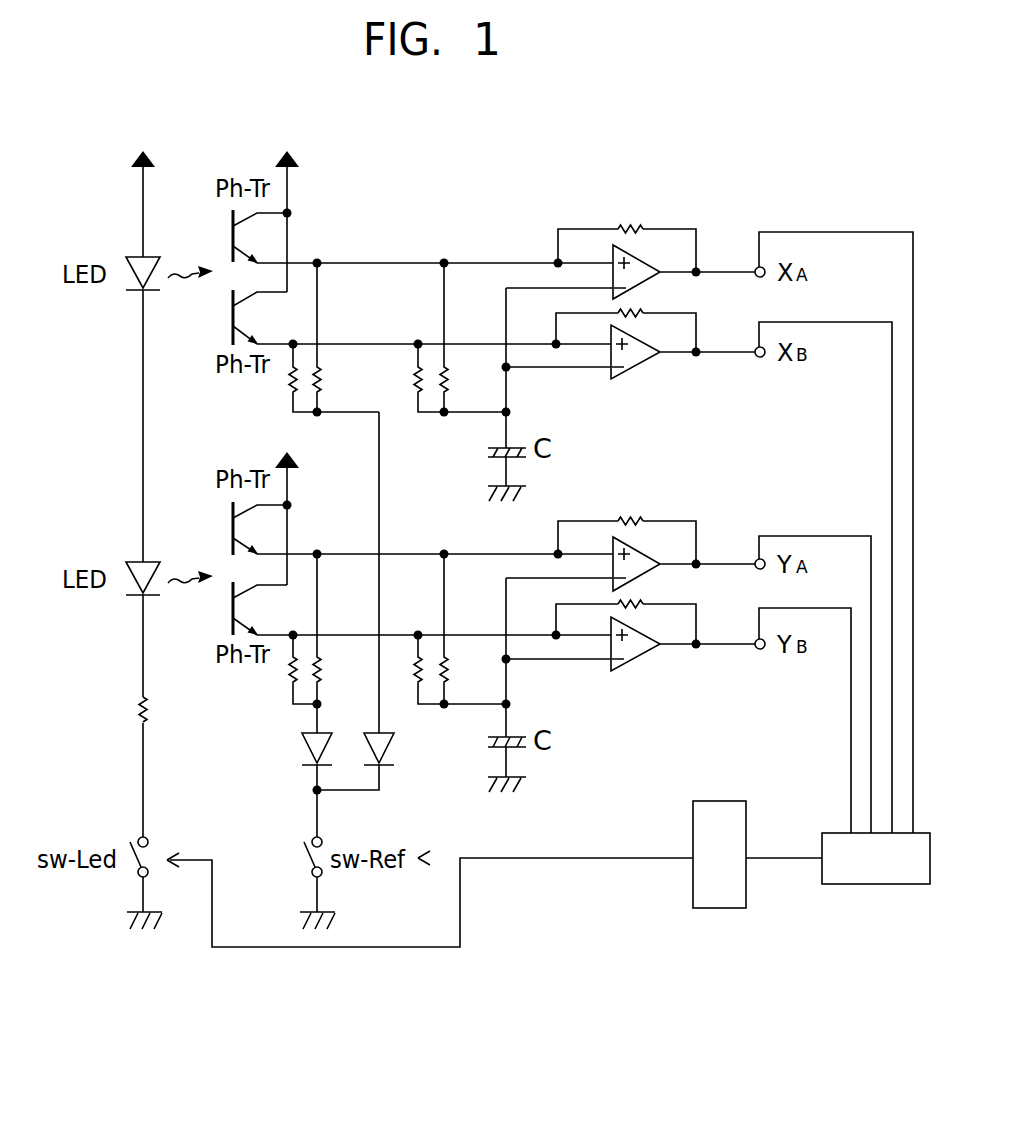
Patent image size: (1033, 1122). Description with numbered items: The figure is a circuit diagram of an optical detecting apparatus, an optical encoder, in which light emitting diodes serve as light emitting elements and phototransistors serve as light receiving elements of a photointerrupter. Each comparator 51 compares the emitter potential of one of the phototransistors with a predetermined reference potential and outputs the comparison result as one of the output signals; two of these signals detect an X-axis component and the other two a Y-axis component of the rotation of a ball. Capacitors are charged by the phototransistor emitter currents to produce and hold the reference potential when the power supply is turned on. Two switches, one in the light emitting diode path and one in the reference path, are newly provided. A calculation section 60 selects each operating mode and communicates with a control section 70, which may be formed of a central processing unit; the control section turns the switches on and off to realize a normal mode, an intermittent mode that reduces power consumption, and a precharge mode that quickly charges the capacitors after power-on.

The comparator 51 is at (645, 285).
The calculation section 60 is at (860, 884).
The control section 70 is at (715, 908).